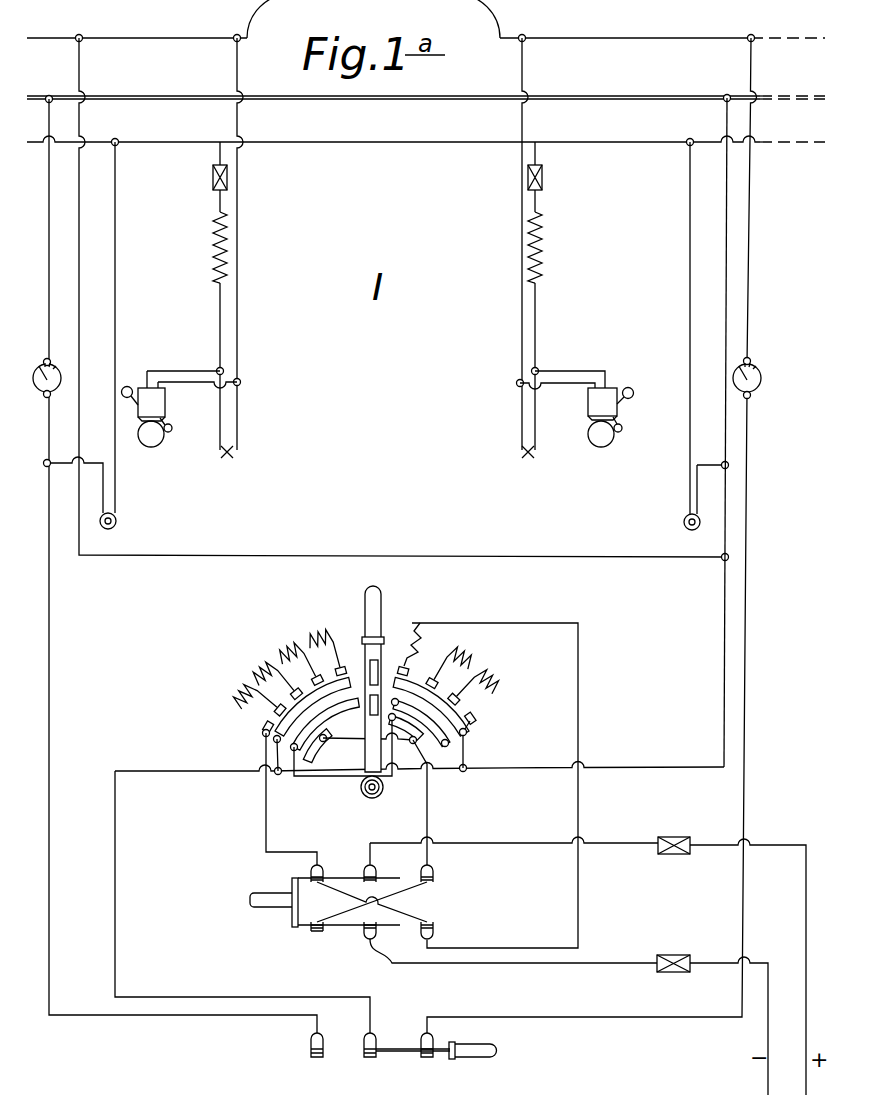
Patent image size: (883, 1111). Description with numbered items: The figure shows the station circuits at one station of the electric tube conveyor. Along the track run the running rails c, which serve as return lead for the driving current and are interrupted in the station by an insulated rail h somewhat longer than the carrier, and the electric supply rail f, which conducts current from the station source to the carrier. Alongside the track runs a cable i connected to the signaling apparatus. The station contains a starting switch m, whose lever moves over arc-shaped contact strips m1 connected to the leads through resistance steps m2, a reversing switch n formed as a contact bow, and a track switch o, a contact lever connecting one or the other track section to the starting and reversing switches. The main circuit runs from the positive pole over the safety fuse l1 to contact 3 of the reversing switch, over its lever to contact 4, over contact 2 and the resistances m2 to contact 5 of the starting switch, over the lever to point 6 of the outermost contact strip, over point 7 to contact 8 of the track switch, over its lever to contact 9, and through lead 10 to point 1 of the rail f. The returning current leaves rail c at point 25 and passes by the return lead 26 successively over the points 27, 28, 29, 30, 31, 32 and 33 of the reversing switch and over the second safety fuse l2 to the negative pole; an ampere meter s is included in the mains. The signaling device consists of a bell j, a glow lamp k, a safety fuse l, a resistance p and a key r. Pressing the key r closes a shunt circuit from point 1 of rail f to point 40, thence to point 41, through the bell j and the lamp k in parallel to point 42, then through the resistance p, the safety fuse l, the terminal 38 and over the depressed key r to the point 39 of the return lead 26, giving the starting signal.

The point of rail f 1 is at (757, 43).
The electric supply rail f is at (607, 45).
The point 40 is at (522, 36).
The insulated rail h is at (387, 99).
The point of rail c 25 is at (733, 88).
The running rail c is at (780, 100).
The cable i is at (641, 143).
The terminal 38 is at (694, 130).
The safety fuse l is at (542, 178).
The resistance p is at (542, 250).
The point 41 is at (516, 383).
The point 42 is at (537, 368).
The bell j is at (617, 412).
The glow lamp k is at (520, 456).
The return lead 26 is at (705, 328).
The key r is at (684, 522).
The point of return lead 39 is at (720, 462).
The lead 10 is at (746, 612).
The ampere meter s is at (761, 378).
The point 7 is at (276, 775).
The point of reversing switch 27 is at (463, 772).
The point of outermost contact strip 6 is at (272, 742).
The point of reversing switch 28 is at (294, 780).
The point of reversing switch 29 is at (326, 742).
The point of reversing switch 30 is at (413, 744).
The contact 2 is at (262, 730).
The arc-shaped contact strips m1 is at (500, 712).
The resistance steps m2 is at (503, 668).
The contact of starting switch 5 is at (342, 667).
The starting switch m is at (374, 604).
The reversing switch n is at (270, 892).
The contact of reversing switch 4 is at (320, 870).
The contact of reversing switch 3 is at (378, 868).
The point of reversing switch 31 is at (434, 875).
The point of reversing switch 32 is at (318, 932).
The point of reversing switch 33 is at (392, 966).
The safety fuse l1 is at (668, 837).
The safety fuse l2 is at (672, 955).
The contact of track switch 8 is at (376, 1040).
The contact of track switch 9 is at (430, 1058).
The track switch o is at (480, 1058).